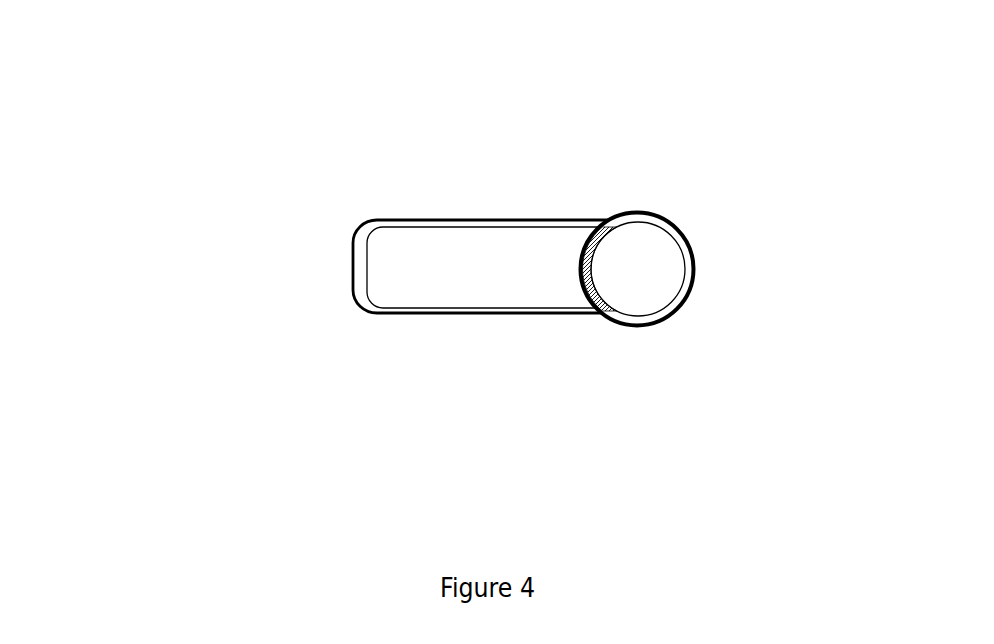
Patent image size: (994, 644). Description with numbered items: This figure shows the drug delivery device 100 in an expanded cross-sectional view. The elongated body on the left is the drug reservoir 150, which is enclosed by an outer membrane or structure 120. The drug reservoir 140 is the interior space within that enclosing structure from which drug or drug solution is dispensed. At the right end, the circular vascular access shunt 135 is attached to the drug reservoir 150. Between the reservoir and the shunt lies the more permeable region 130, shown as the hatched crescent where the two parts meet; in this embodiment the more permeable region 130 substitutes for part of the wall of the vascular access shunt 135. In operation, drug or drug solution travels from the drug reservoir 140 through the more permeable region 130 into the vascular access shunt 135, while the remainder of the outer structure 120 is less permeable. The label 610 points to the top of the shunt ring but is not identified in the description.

The drug delivery device 100 is at (483, 286).
The outer membrane or structure 120 is at (318, 268).
The more permeable region 130 is at (558, 297).
The vascular access shunt 135 is at (623, 377).
The drug reservoir 140 is at (407, 292).
The drug reservoir 150 is at (340, 273).
The circular ring 610 is at (642, 182).